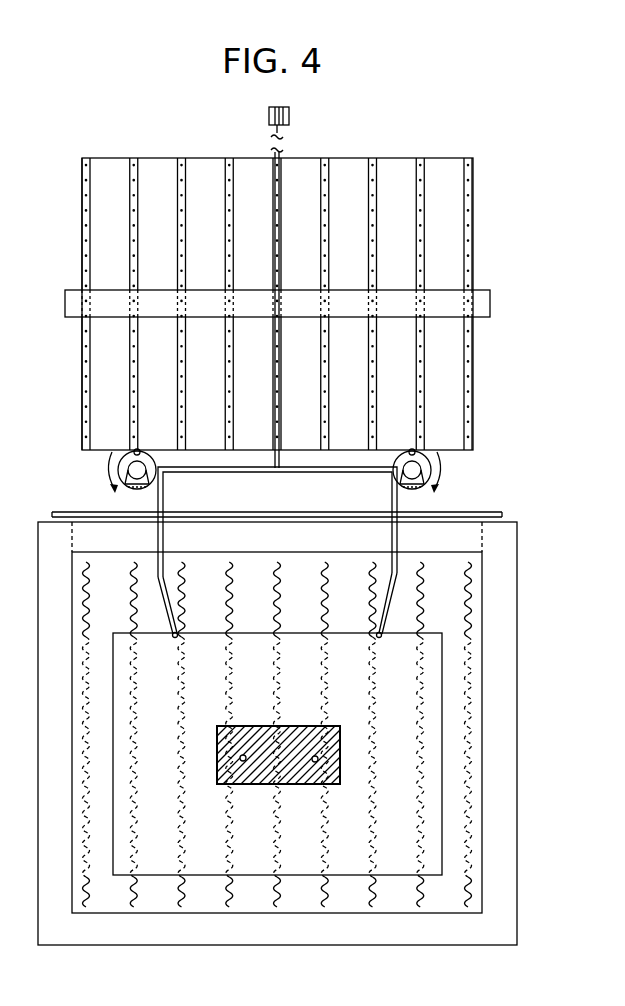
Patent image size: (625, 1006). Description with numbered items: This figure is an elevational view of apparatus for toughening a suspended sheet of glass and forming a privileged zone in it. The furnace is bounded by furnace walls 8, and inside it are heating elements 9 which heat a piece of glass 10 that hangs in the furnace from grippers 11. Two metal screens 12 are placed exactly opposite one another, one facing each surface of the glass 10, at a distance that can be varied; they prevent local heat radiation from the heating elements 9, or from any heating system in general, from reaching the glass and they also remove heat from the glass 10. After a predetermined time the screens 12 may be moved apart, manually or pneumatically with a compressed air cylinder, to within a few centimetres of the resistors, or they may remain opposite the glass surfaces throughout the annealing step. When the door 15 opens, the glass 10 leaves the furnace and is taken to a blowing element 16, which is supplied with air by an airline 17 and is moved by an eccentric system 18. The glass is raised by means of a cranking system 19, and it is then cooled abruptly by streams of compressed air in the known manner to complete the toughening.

The furnace walls 8 is at (508, 631).
The heating elements 9 is at (88, 845).
The piece of glass 10 is at (287, 634).
The grippers 11 is at (181, 591).
The metal screens 12 is at (291, 726).
The door 15 is at (302, 496).
The blowing element 16 is at (182, 380).
The airline 17 is at (478, 292).
The eccentric system 18 is at (429, 462).
The cranking system 19 is at (279, 457).